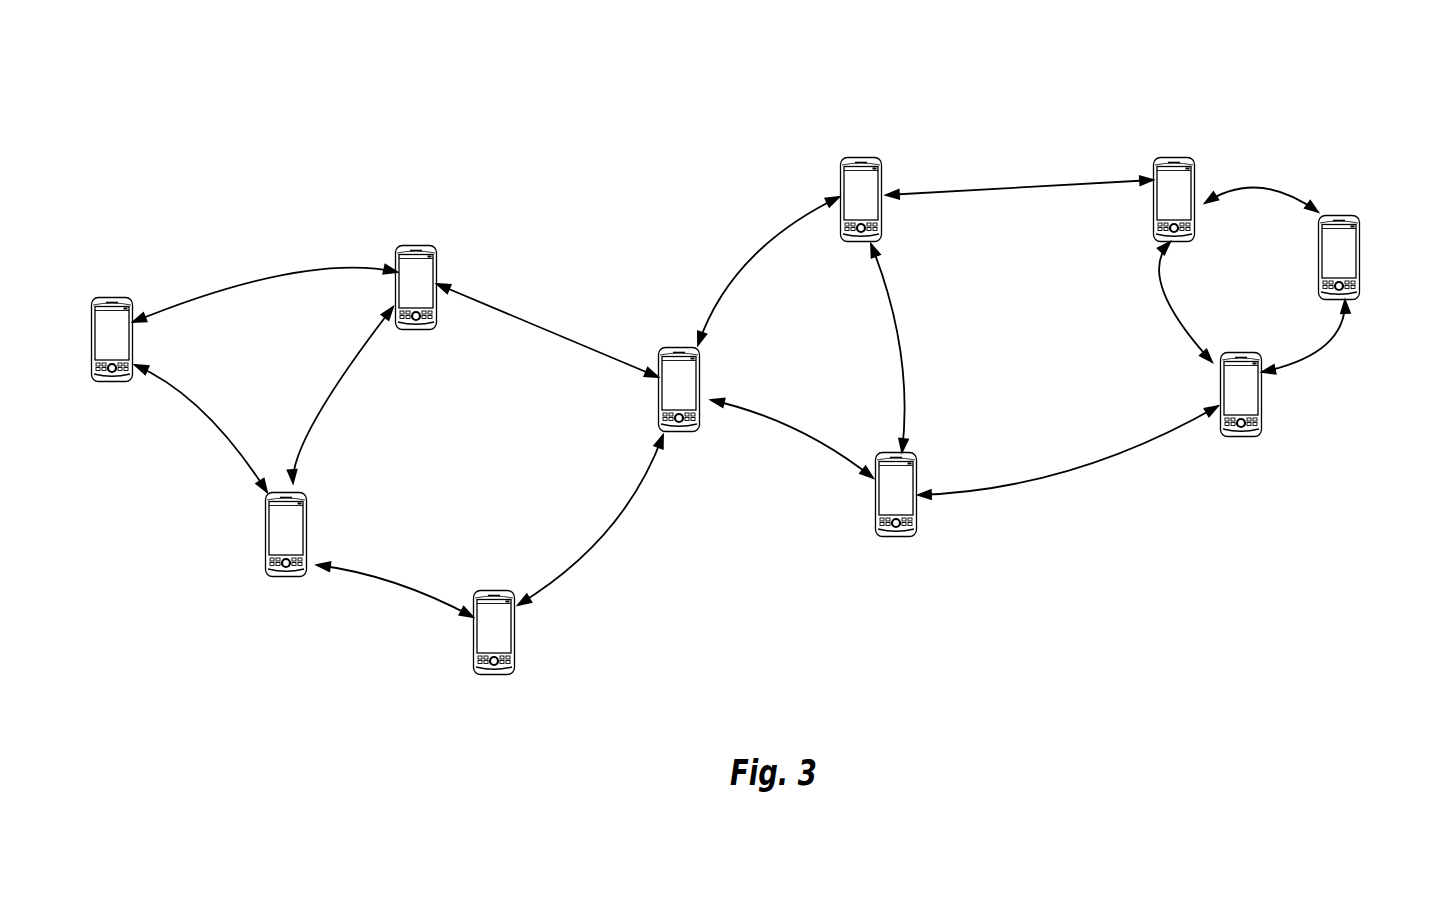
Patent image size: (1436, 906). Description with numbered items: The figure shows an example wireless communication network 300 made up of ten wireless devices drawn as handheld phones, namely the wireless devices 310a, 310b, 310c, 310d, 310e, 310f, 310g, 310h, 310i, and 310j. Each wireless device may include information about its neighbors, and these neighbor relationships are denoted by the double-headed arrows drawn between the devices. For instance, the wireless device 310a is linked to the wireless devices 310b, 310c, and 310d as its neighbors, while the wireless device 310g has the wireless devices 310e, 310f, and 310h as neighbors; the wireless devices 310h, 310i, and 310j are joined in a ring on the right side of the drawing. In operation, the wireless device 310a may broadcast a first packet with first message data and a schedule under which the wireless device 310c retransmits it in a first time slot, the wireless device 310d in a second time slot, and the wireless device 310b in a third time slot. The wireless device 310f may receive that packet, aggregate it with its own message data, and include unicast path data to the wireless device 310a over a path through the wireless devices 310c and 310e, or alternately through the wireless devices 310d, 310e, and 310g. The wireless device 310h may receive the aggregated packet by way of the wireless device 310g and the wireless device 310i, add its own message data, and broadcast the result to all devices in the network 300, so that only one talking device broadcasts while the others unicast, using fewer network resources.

The wireless communication network 300 is at (176, 67).
The wireless device 310a is at (275, 578).
The wireless device 310b is at (127, 296).
The wireless device 310c is at (430, 245).
The wireless device 310d is at (481, 676).
The wireless device 310e is at (663, 347).
The wireless device 310f is at (885, 539).
The wireless device 310g is at (866, 157).
The wireless device 310h is at (1183, 157).
The wireless device 310i is at (1228, 438).
The wireless device 310j is at (1350, 216).